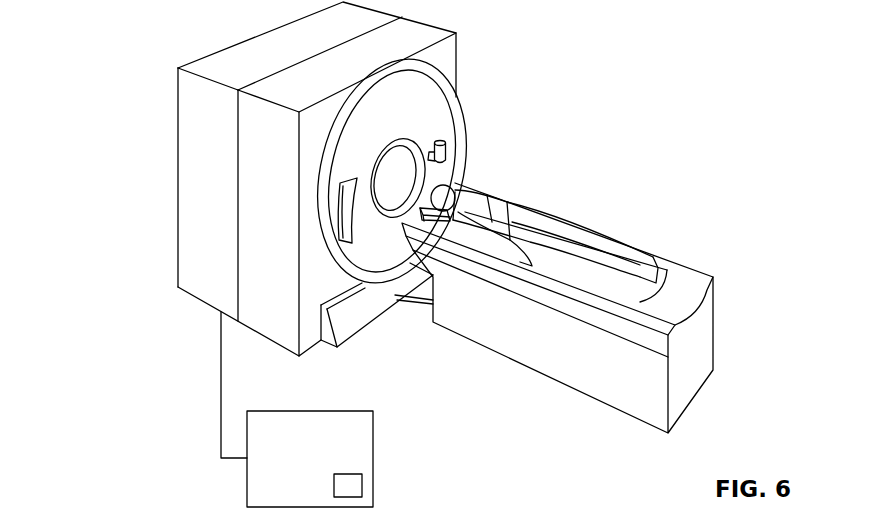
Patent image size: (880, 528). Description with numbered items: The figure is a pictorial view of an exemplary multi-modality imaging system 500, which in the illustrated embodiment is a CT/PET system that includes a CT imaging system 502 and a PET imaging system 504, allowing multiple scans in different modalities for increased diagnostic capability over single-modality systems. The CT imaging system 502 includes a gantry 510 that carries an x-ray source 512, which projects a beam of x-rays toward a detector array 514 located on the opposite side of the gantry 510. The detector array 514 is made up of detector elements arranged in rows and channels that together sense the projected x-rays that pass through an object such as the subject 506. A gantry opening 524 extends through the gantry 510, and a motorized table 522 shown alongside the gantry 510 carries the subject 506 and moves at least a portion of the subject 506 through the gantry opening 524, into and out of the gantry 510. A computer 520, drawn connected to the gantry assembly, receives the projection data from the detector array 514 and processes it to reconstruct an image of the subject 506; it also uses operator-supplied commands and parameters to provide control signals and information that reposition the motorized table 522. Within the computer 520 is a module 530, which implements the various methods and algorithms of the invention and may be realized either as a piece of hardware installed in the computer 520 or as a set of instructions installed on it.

The multi-modality imaging system 500 is at (142, 28).
The CT imaging system 502 is at (273, 327).
The PET imaging system 504 is at (205, 285).
The subject 506 is at (512, 205).
The gantry 510 is at (444, 53).
The x-ray source 512 is at (449, 152).
The detector array 514 is at (353, 218).
The computer 520 is at (373, 435).
The motorized table 522 is at (562, 375).
The gantry opening 524 is at (392, 160).
The module 530 is at (353, 482).